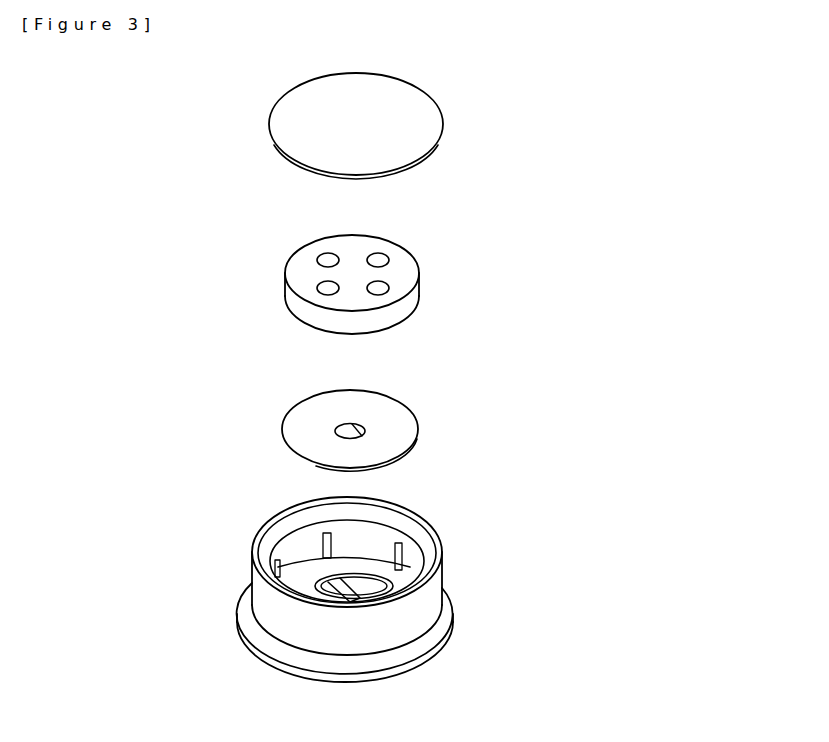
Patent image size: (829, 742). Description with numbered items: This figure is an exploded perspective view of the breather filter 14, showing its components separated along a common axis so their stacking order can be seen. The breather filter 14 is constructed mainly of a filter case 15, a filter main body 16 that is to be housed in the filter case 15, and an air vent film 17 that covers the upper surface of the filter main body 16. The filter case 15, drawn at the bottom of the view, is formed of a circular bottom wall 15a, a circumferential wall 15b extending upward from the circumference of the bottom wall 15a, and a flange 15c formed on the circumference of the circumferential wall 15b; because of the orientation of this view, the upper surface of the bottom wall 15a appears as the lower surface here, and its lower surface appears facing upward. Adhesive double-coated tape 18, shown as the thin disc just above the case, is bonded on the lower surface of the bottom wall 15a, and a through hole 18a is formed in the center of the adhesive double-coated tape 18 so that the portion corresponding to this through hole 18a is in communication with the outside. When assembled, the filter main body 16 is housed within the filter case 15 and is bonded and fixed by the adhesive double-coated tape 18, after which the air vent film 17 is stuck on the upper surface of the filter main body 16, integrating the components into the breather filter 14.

The breather filter 14 is at (580, 99).
The filter case 15 is at (344, 595).
The bottom wall 15a is at (307, 580).
The circumferential wall 15b is at (267, 608).
The flange 15c is at (398, 658).
The filter main body 16 is at (420, 287).
The air vent film 17 is at (443, 122).
The adhesive double-coated tape 18 is at (408, 410).
The through hole 18a is at (353, 422).